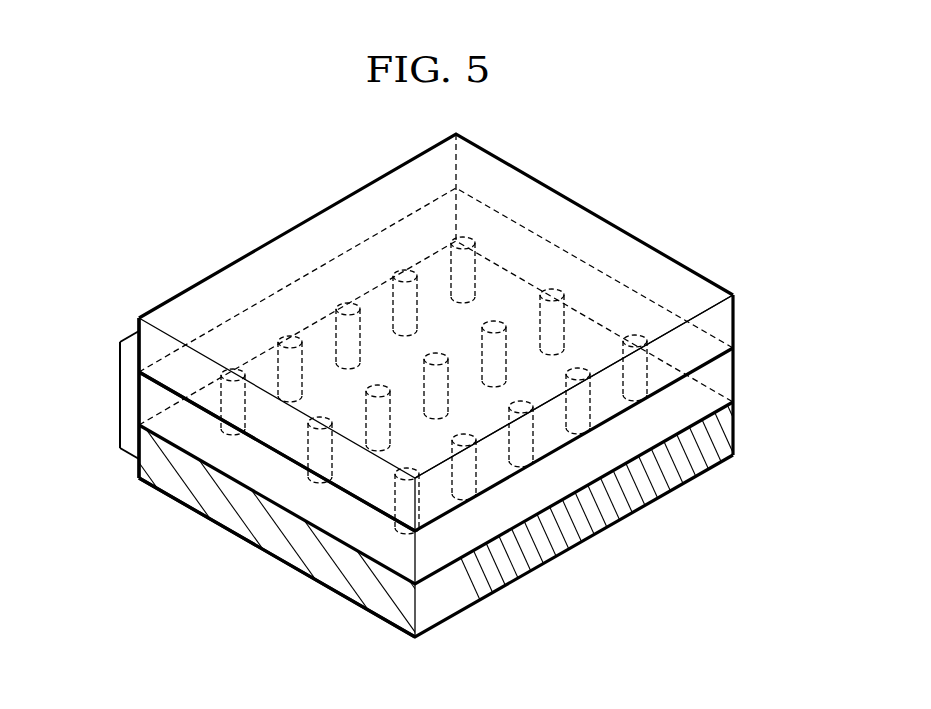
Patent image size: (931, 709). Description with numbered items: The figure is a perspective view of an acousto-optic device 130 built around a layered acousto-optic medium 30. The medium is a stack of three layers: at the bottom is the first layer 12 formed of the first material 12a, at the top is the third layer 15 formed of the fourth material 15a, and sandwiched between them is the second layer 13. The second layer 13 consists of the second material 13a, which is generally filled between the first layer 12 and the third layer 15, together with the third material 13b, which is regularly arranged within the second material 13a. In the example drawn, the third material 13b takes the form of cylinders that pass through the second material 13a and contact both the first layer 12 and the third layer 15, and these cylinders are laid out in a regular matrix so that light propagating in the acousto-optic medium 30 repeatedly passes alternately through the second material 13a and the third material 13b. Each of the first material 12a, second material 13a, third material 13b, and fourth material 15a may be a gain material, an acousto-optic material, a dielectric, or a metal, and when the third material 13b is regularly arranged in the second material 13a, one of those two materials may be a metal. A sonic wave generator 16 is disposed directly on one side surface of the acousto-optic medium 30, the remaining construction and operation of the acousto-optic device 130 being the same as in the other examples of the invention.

The first layer 12 is at (737, 432).
The first material 12a is at (718, 466).
The second layer 13 is at (737, 375).
The second material 13a is at (197, 372).
The third material 13b is at (233, 374).
The third layer 15 is at (737, 325).
The fourth material 15a is at (718, 358).
The sonic wave generator 16 is at (120, 397).
The acousto-optic medium 30 is at (260, 578).
The acousto-optic device 130 is at (132, 546).